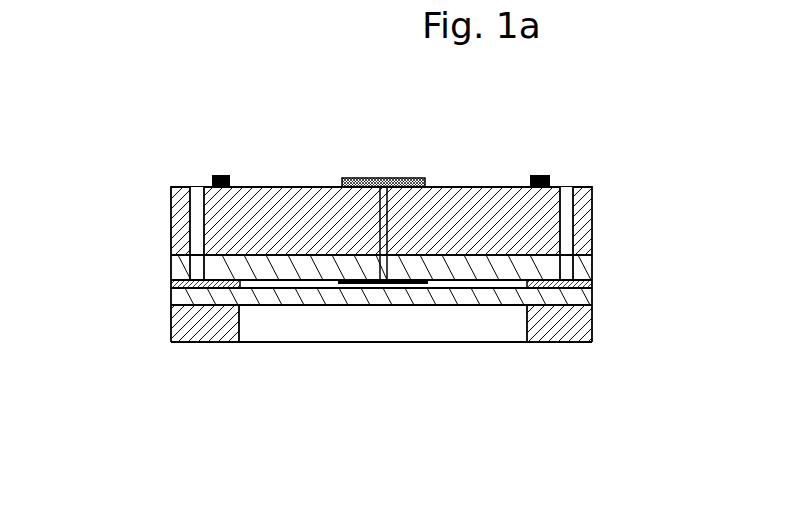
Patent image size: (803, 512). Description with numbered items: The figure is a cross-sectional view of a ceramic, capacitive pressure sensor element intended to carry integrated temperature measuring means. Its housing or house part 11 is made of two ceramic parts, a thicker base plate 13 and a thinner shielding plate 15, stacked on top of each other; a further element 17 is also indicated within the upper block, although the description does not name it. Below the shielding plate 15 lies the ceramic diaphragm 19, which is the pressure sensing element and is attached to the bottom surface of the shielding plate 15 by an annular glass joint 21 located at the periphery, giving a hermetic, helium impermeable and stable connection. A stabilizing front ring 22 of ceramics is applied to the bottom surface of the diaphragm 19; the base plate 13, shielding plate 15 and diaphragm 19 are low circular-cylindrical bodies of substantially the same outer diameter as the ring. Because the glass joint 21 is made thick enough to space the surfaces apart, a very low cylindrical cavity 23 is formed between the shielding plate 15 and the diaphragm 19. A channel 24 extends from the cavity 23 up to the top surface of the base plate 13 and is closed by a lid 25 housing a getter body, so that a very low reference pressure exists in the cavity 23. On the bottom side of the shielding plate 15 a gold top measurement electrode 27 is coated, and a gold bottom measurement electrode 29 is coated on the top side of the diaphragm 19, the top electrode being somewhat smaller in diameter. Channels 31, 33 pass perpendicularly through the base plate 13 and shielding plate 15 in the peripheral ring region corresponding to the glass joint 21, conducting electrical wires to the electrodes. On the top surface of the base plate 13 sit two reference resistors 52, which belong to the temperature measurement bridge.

The housing 11 is at (168, 185).
The base plate 13 is at (248, 201).
The shielding plate 15 is at (572, 276).
The upper layer portion 17 is at (432, 254).
The diaphragm 19 is at (577, 295).
The glass joint 21 is at (171, 285).
The front ring 22 is at (572, 332).
The cavity 23 is at (292, 283).
The channel 24 is at (383, 205).
The lid 25 is at (375, 178).
The top measurement electrode 27 is at (352, 282).
The bottom measurement electrode 29 is at (365, 283).
The channel 31 is at (565, 200).
The channel 33 is at (194, 196).
The reference resistors 52 is at (218, 176).